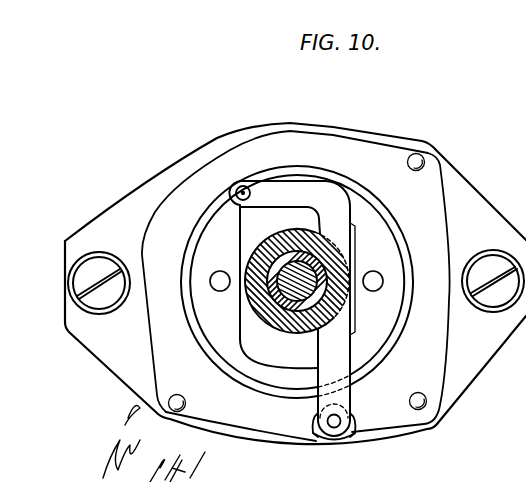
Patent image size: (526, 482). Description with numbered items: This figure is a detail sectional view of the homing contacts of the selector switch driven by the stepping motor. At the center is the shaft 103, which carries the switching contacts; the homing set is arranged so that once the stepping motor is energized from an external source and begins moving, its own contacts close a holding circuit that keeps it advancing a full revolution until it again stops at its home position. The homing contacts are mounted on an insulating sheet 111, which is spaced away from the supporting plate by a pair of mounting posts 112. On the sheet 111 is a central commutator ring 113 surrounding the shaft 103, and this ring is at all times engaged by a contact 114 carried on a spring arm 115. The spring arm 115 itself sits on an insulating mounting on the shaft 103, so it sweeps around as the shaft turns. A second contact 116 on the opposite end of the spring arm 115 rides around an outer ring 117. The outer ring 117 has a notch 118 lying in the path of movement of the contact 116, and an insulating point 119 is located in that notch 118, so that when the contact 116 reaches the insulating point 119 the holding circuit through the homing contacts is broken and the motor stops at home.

The shaft 103 is at (327, 265).
The insulating sheet 111 is at (152, 182).
The mounting posts 112 is at (105, 298).
The central commutator ring 113 is at (292, 267).
The contact 114 is at (243, 186).
The spring arm 115 is at (318, 196).
The contact 116 is at (349, 438).
The outer ring 117 is at (297, 296).
The notch 118 is at (311, 440).
The insulating point 119 is at (334, 430).